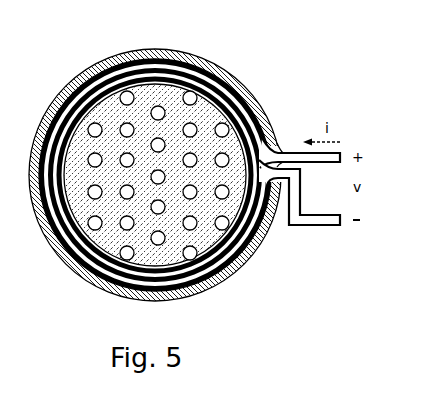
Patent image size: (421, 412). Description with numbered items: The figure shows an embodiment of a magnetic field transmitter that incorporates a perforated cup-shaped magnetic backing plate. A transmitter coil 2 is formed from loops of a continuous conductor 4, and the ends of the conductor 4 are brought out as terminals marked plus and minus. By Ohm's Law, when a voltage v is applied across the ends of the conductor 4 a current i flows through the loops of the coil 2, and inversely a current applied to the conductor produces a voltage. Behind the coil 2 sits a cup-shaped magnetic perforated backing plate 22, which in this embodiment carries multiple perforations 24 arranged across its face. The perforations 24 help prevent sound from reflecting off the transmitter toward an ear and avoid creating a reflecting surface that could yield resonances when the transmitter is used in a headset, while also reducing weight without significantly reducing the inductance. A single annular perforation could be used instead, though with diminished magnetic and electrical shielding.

The transmitter coil 2 is at (80, 72).
The cup-shaped magnetic perforated backing plate 22 is at (243, 83).
The perforations 24 is at (192, 91).
The continuous conductor 4 is at (300, 227).